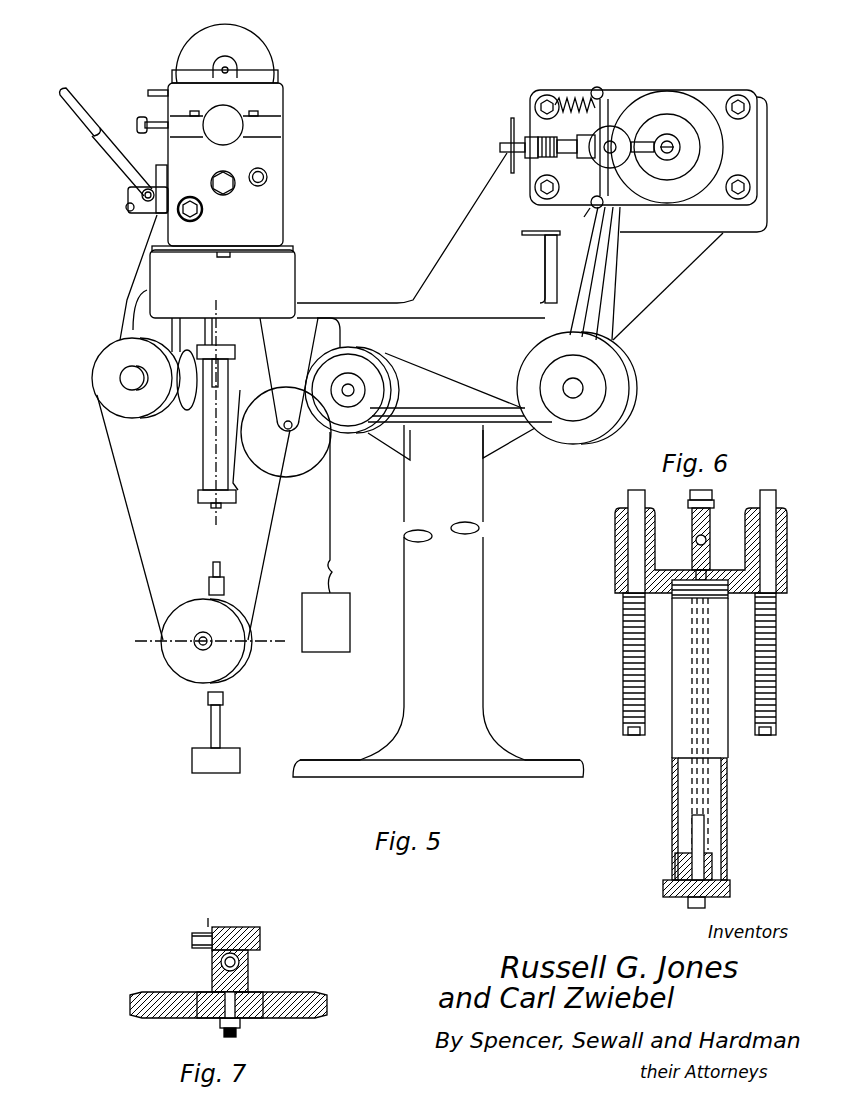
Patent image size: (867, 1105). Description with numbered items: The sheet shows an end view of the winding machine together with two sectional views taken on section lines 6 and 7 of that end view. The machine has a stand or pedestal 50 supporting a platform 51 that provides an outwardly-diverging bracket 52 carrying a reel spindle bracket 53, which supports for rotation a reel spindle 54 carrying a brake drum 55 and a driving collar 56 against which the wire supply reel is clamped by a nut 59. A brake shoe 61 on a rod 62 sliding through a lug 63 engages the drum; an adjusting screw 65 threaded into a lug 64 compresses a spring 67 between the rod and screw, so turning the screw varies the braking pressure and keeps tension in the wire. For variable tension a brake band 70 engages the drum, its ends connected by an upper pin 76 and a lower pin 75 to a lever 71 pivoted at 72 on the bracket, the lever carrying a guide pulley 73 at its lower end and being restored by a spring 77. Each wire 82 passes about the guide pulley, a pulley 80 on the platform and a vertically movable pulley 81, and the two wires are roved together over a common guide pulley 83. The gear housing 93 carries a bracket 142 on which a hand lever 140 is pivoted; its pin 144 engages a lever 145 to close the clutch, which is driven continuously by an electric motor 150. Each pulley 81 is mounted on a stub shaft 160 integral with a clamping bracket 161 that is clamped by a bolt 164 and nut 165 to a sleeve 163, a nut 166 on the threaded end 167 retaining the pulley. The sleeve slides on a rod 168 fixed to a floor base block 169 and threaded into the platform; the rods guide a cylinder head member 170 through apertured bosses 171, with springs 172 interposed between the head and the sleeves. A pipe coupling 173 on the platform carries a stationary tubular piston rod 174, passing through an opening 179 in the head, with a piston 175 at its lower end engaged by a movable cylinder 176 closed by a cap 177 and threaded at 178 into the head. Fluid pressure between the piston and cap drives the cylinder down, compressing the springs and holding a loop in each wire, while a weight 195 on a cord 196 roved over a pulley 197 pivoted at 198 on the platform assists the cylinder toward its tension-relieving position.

In FIG. 5, the stand or pedestal 50 is at (484, 609).
In FIG. 5, the platform 51 is at (296, 273).
In FIG. 5, the outwardly-diverging bracket 52 is at (693, 228).
In FIG. 5, the reel spindle bracket 53 is at (748, 92).
In FIG. 5, the reel spindle 54 is at (650, 120).
In FIG. 5, the brake drum 55 is at (728, 138).
In FIG. 5, the driving collar 56 is at (676, 140).
In FIG. 5, the nut 59 is at (625, 160).
In FIG. 5, the brake shoe 61 is at (605, 125).
In FIG. 5, the rod 62 is at (580, 154).
In FIG. 5, the lug 63 is at (555, 138).
In FIG. 5, the lug 64 is at (532, 137).
In FIG. 5, the adjusting screw 65 is at (500, 145).
In FIG. 5, the spring 67 is at (520, 152).
In FIG. 5, the brake band 70 is at (660, 90).
In FIG. 5, the lever 71 is at (615, 270).
In FIG. 5, the pivot 72 is at (592, 207).
In FIG. 5, the guide pulley 73 is at (612, 430).
In FIG. 5, the pin 75 is at (593, 212).
In FIG. 5, the pin 76 is at (600, 88).
In FIG. 5, the spring 77 is at (582, 98).
In FIG. 5, the pulley 80 is at (358, 433).
In FIG. 5, the pulley 81 is at (240, 668).
In FIG. 7, the pulley 81 is at (130, 1000).
In FIG. 5, the wire 82 is at (125, 297).
In FIG. 5, the common guide pulley 83 is at (92, 388).
In FIG. 5, the gear housing 93 is at (284, 191).
In FIG. 5, the lever 140 is at (60, 133).
In FIG. 5, the bracket 142 is at (156, 170).
In FIG. 5, the pin 144 is at (128, 210).
In FIG. 5, the lever 145 is at (128, 192).
In FIG. 5, the electric motor 150 is at (268, 51).
In FIG. 5, the stub shaft 160 is at (199, 645).
In FIG. 7, the stub shaft 160 is at (222, 1020).
In FIG. 7, the clamping bracket 161 is at (248, 978).
In FIG. 5, the sleeve 163 is at (230, 582).
In FIG. 7, the sleeve 163 is at (239, 960).
In FIG. 7, the bolt 164 is at (260, 935).
In FIG. 7, the nut 165 is at (207, 918).
In FIG. 7, the nut 166 is at (240, 1025).
In FIG. 7, the threaded end 167 is at (234, 1037).
In FIG. 5, the rod 168 is at (218, 370).
In FIG. 6, the rod 168 is at (628, 731).
In FIG. 7, the rod 168 is at (221, 962).
In FIG. 5, the base block 169 is at (240, 752).
In FIG. 5, the cylinder head member 170 is at (235, 352).
In FIG. 6, the cylinder head member 170 is at (615, 563).
In FIG. 5, the apertured boss 171 is at (208, 338).
In FIG. 6, the apertured boss 171 is at (615, 520).
In FIG. 6, the spring 172 is at (623, 640).
In FIG. 6, the pipe coupling 173 is at (710, 520).
In FIG. 6, the tubular piston rod 174 is at (706, 575).
In FIG. 6, the piston 175 is at (712, 866).
In FIG. 5, the movable cylinder 176 is at (203, 445).
In FIG. 6, the movable cylinder 176 is at (727, 815).
In FIG. 6, the cap 177 is at (730, 890).
In FIG. 6, the threaded upper end 178 is at (672, 598).
In FIG. 6, the opening 179 is at (696, 545).
In FIG. 5, the weight 195 is at (350, 600).
In FIG. 5, the cord 196 is at (240, 465).
In FIG. 5, the pulley 197 is at (290, 478).
In FIG. 5, the pivot 198 is at (288, 421).
In FIG. 5, the section line 6— 6 is at (216, 296).
In FIG. 5, the section line 7— 7 is at (144, 632).